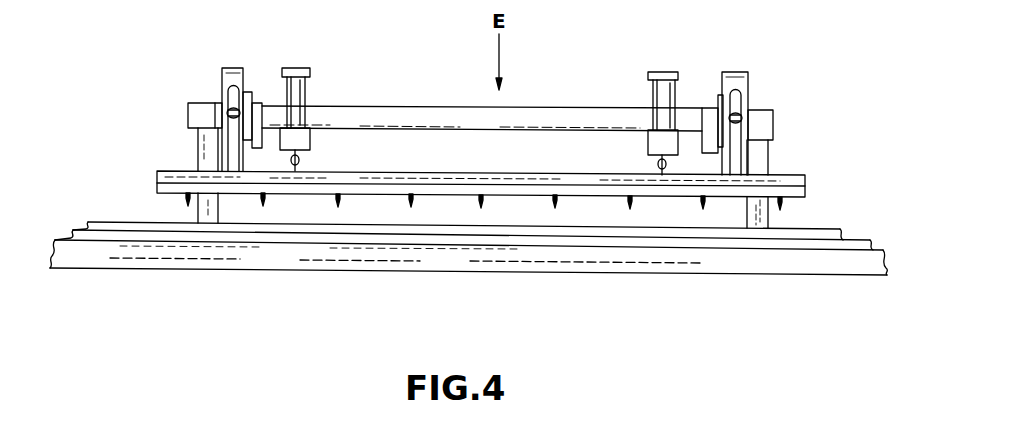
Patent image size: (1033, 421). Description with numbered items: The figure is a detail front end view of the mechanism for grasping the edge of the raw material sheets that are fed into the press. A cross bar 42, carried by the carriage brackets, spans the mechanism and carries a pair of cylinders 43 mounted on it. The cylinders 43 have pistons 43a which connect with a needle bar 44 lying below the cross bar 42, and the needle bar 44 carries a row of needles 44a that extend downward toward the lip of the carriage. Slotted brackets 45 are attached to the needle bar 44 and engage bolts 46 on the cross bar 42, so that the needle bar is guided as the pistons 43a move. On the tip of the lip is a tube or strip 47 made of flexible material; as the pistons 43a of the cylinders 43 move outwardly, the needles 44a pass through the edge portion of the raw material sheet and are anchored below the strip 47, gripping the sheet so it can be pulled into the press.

The cross bar 42 is at (543, 106).
The cylinders 43 is at (310, 100).
The pistons 43a is at (302, 163).
The needle bar 44 is at (433, 172).
The needles 44a is at (630, 209).
The slotted brackets 45 is at (222, 76).
The bolts 46 is at (238, 100).
The tube or strip 47 is at (283, 228).